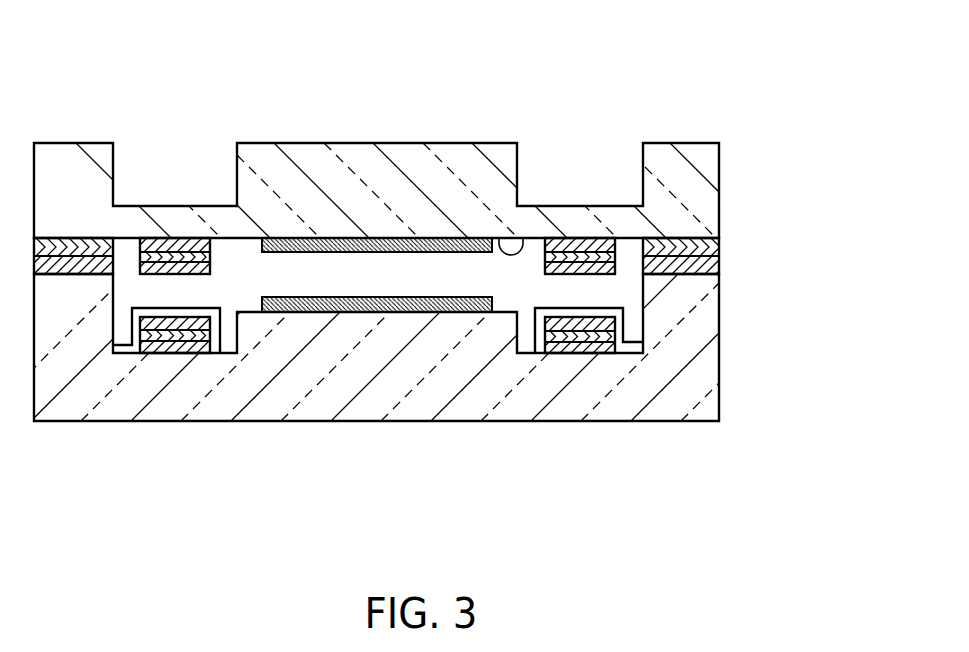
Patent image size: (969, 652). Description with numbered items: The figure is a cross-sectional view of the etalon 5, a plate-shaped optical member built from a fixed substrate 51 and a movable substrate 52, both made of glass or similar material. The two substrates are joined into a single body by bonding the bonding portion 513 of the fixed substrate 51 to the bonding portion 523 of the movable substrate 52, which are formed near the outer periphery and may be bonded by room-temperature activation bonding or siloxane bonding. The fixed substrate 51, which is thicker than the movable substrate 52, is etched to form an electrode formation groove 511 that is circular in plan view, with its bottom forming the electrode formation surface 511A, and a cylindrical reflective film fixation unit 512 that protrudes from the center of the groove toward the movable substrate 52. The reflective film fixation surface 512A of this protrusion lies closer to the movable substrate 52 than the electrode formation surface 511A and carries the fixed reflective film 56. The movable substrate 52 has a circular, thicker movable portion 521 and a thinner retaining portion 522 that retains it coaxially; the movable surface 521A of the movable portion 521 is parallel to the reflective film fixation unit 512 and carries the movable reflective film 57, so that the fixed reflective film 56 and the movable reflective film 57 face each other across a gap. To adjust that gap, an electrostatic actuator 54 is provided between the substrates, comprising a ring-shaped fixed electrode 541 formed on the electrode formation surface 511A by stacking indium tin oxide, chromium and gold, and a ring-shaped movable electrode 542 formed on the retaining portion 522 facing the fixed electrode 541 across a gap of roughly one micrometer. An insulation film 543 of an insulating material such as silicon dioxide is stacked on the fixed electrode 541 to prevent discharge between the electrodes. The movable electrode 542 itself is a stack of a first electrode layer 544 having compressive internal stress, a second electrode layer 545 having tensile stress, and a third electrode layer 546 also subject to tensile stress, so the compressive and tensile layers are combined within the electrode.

The etalon 5 is at (414, 262).
The fixed substrate 51 is at (719, 380).
The electrode formation groove 511 is at (642, 311).
The electrode formation surface 511A is at (525, 350).
The reflective film fixation unit 512 is at (237, 330).
The reflective film fixation surface 512A is at (256, 299).
The bonding portion 513 is at (719, 259).
The movable substrate 52 is at (424, 154).
The movable portion 521 is at (270, 143).
The movable surface 521A is at (501, 242).
The retaining portion 522 is at (212, 206).
The bonding portion 523 is at (719, 254).
The electrostatic actuator 54 is at (219, 262).
The fixed electrode 541 is at (589, 353).
The movable electrode 542 is at (594, 142).
The insulation film 543 is at (140, 321).
The first electrode layer 544 is at (555, 250).
The second electrode layer 545 is at (569, 258).
The third electrode layer 546 is at (604, 266).
The fixed reflective film 56 is at (397, 312).
The movable reflective film 57 is at (425, 246).